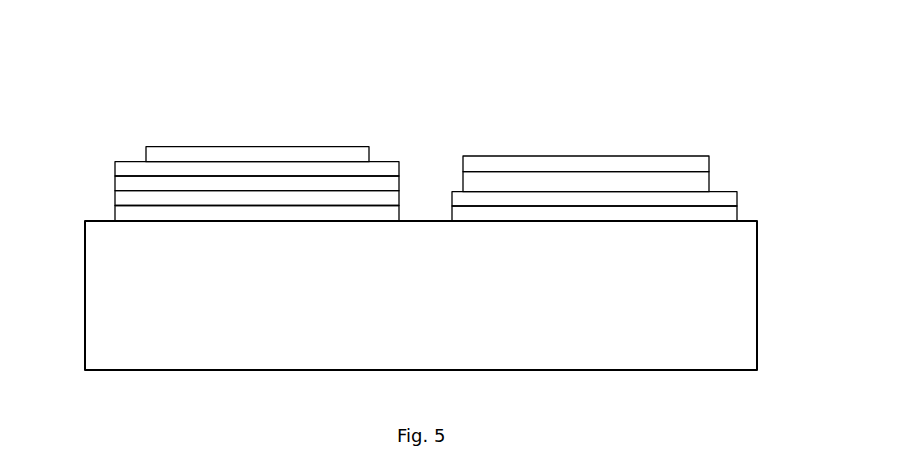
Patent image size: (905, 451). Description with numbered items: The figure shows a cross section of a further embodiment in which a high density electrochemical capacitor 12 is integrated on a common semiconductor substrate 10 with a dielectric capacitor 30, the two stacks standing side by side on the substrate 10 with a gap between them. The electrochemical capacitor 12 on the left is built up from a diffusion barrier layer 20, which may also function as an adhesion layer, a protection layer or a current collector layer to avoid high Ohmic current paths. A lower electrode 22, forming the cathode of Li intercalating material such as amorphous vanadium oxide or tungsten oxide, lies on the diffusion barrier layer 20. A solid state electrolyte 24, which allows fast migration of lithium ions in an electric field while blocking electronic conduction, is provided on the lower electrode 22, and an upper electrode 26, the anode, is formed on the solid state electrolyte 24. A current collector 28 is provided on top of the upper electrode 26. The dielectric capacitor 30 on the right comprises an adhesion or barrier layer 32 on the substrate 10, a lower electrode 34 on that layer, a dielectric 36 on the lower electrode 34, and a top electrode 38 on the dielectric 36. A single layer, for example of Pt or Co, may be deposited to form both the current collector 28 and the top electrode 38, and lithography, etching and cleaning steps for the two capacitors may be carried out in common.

The semiconductor substrate 10 is at (86, 289).
The electrochemical capacitor 12 is at (114, 87).
The diffusion barrier layer 20 is at (147, 216).
The lower electrode 22 is at (137, 202).
The solid state electrolyte 24 is at (125, 180).
The upper electrode 26 is at (130, 172).
The current collector 28 is at (235, 147).
The dielectric capacitor 30 is at (453, 135).
The adhesion or barrier layer 32 is at (725, 214).
The lower electrode 34 is at (707, 203).
The dielectric 36 is at (695, 188).
The top electrode 38 is at (577, 156).